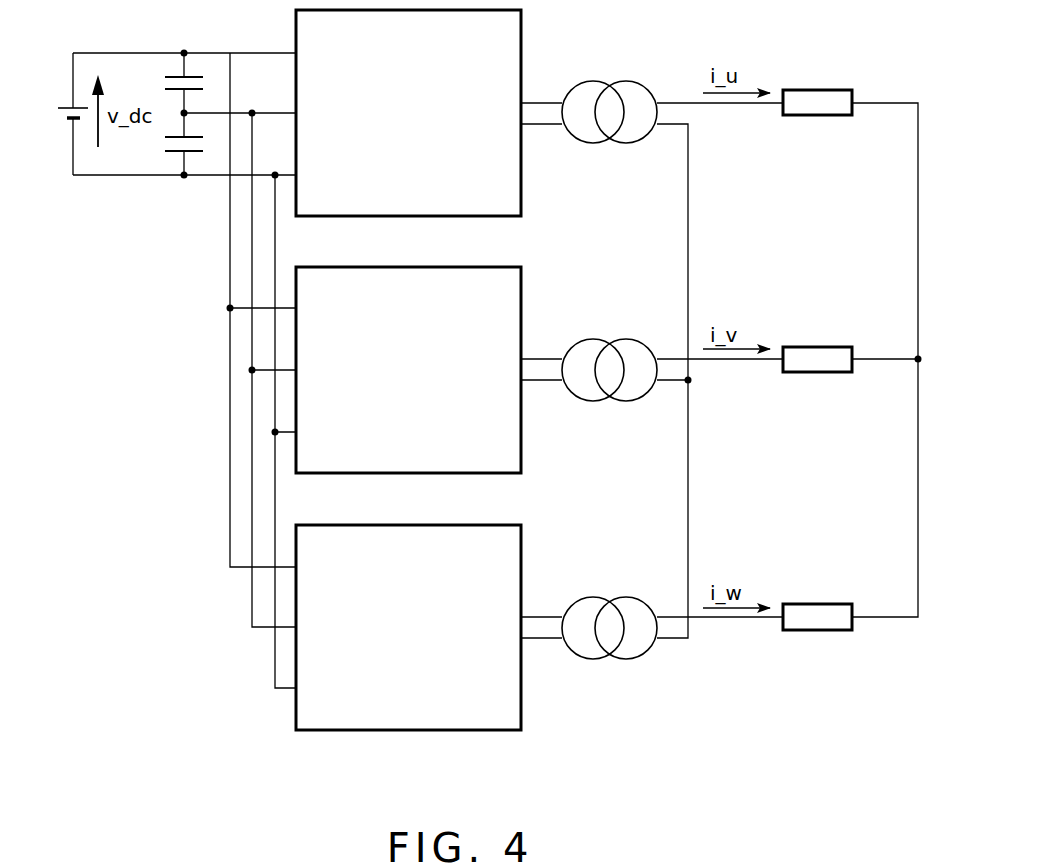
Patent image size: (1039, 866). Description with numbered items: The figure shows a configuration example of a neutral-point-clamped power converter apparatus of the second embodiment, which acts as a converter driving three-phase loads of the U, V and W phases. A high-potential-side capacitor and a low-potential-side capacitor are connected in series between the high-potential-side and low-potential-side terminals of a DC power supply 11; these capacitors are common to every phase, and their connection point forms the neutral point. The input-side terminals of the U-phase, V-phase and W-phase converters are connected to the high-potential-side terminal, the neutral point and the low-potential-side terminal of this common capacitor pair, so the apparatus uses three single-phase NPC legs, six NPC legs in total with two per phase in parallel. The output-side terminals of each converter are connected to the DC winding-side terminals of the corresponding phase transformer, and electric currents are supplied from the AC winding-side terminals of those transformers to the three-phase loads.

The DC power supply 11 is at (66, 107).